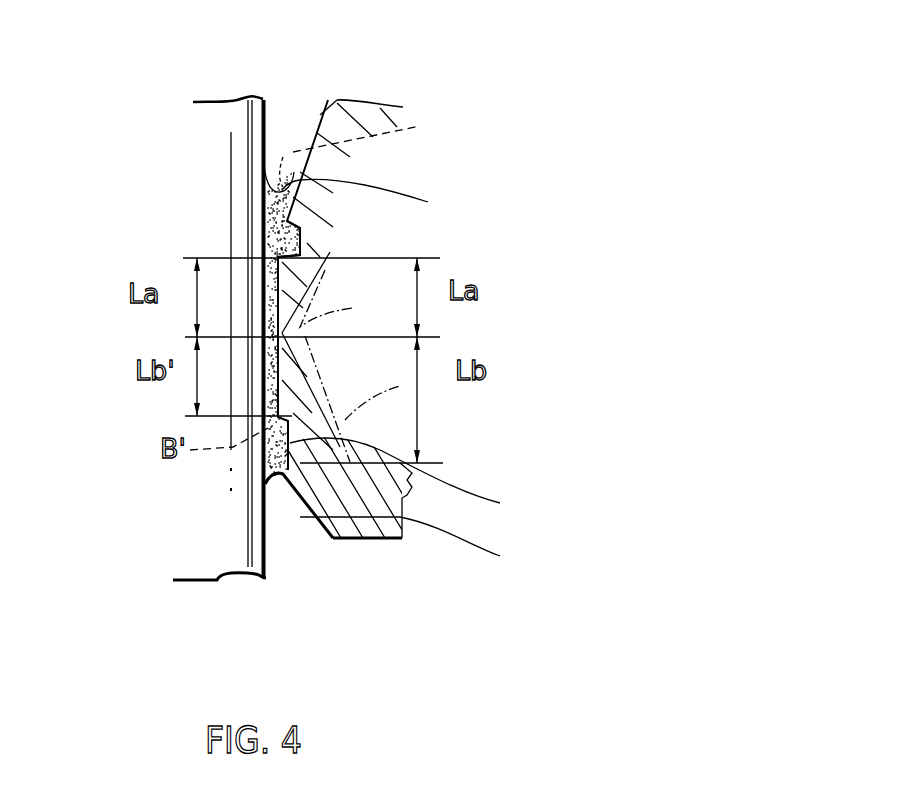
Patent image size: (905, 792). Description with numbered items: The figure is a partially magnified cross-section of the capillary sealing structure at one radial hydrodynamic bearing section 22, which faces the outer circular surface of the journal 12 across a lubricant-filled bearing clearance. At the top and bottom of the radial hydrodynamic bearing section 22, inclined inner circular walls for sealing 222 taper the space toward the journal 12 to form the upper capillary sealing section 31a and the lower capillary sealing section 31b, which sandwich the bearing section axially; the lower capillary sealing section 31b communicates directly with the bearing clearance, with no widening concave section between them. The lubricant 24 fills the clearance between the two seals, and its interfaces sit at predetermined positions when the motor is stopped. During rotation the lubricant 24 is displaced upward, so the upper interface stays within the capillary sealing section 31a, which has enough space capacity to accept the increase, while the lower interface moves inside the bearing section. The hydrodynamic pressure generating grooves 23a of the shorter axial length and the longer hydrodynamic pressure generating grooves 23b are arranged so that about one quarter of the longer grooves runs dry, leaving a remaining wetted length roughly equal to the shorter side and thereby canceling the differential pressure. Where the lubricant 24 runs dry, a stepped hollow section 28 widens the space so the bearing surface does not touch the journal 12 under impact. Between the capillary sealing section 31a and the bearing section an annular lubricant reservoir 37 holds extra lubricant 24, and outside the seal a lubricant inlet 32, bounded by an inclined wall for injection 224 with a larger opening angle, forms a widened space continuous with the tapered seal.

The journal 12 is at (207, 566).
The lubricant inlet 32 is at (302, 127).
The capillary sealing section 31a is at (264, 167).
The capillary sealing section 31b is at (318, 567).
The lubricant 24 is at (266, 478).
The inclined inner circular wall for sealing 222 is at (300, 170).
The inclined wall for injection 224 is at (328, 100).
The lubricant reservoir 37 is at (307, 243).
The hydrodynamic pressure generating grooves 23a is at (336, 292).
The hydrodynamic pressure generating grooves 23b is at (341, 397).
The hollow section 28 is at (416, 478).
The radial hydrodynamic bearing section 22 is at (375, 527).